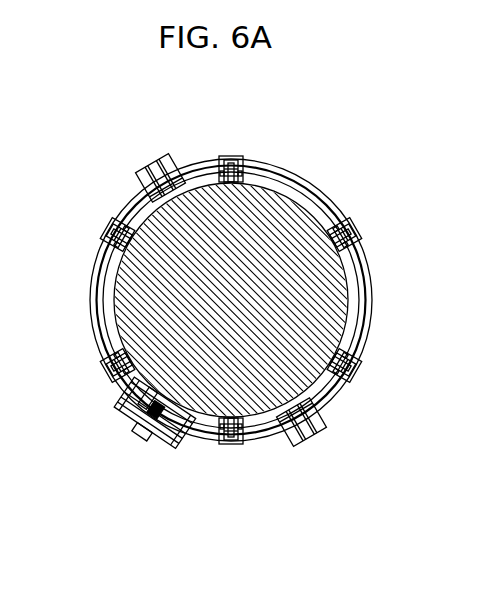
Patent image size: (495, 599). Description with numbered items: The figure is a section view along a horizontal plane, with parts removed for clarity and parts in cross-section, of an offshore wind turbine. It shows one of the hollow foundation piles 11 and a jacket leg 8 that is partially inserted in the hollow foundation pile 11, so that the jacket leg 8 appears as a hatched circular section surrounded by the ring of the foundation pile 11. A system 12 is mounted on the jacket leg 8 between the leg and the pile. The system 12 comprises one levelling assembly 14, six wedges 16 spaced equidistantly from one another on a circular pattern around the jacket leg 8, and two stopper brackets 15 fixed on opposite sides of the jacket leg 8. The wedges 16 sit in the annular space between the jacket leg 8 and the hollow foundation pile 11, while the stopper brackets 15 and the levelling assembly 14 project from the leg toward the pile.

The jacket leg 8 is at (285, 220).
The hollow foundation pile 11 is at (367, 315).
The system 12 is at (383, 167).
The levelling assembly 14 is at (137, 456).
The stopper bracket 15 is at (149, 146).
The wedge 16 is at (236, 157).